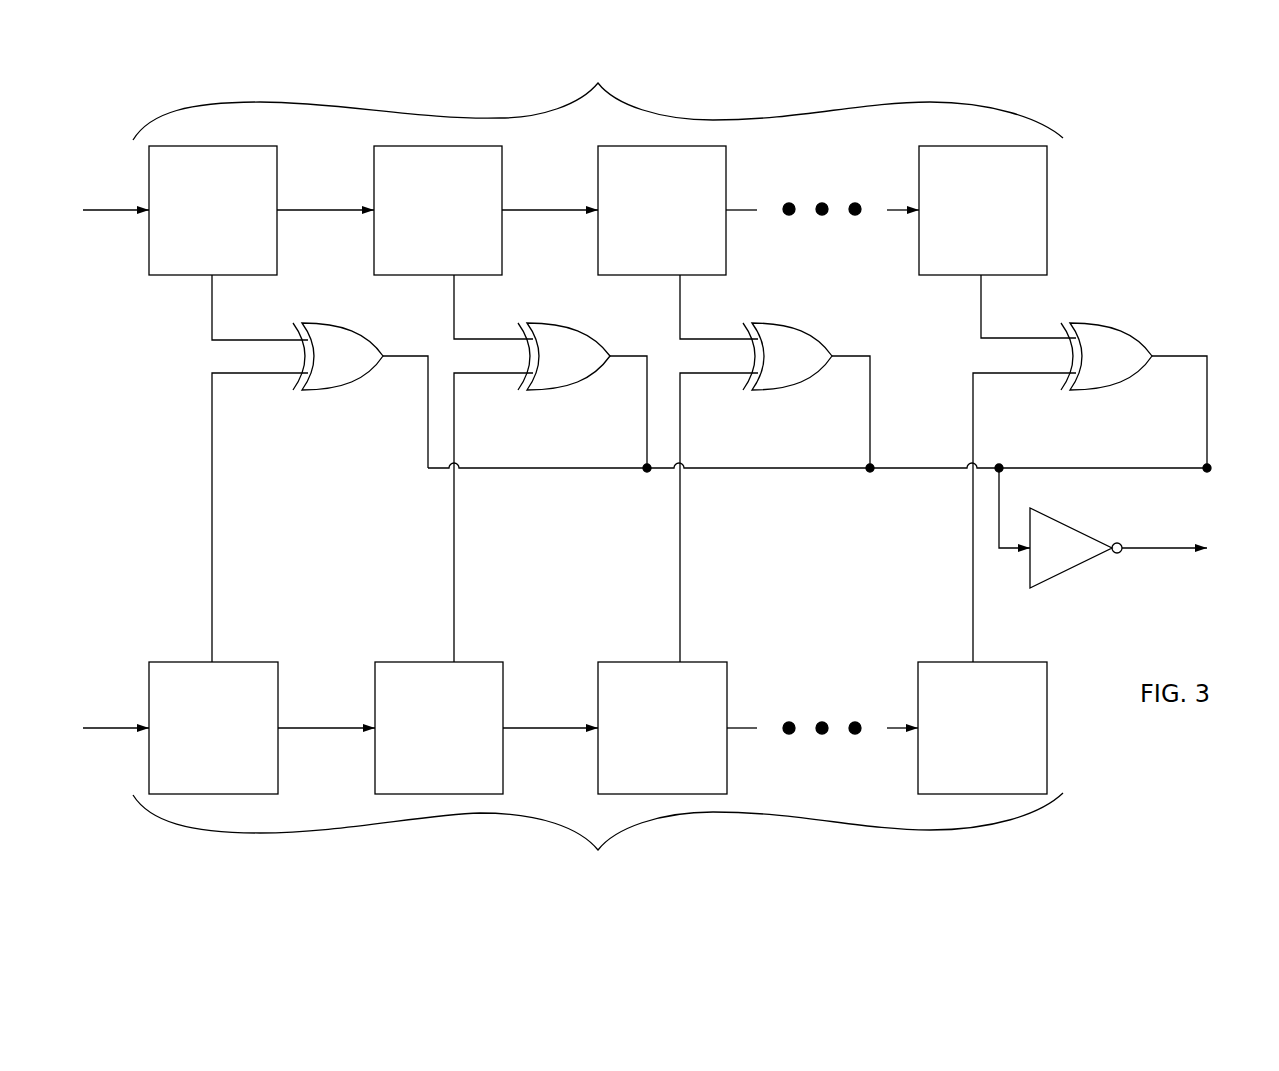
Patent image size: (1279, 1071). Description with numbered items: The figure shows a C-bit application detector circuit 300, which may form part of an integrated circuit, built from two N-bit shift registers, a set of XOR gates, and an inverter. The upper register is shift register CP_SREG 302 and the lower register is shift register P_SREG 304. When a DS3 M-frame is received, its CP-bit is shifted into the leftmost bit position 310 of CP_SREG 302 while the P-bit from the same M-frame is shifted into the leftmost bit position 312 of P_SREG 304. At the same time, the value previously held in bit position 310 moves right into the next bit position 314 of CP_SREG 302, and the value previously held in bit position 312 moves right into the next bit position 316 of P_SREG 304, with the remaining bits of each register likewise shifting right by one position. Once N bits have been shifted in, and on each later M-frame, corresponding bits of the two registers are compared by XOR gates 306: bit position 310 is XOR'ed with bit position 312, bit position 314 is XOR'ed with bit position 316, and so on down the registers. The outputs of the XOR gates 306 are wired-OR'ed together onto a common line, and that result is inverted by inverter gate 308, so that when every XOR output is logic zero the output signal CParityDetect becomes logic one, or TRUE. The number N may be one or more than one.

The C-bit application detector circuit 300 is at (1097, 77).
The shift register CP_SREG 302 is at (594, 83).
The shift register P_SREG 304 is at (598, 851).
The XOR gates 306 is at (326, 323).
The inverter gate 308 is at (1072, 566).
The leftmost bit position of shift register CP_SREG 310 is at (149, 275).
The leftmost bit position of shift register P_SREG 312 is at (149, 663).
The second to the leftmost bit position of CP_SREG 314 is at (374, 160).
The second to the leftmost bit position of P_SREG 316 is at (375, 690).